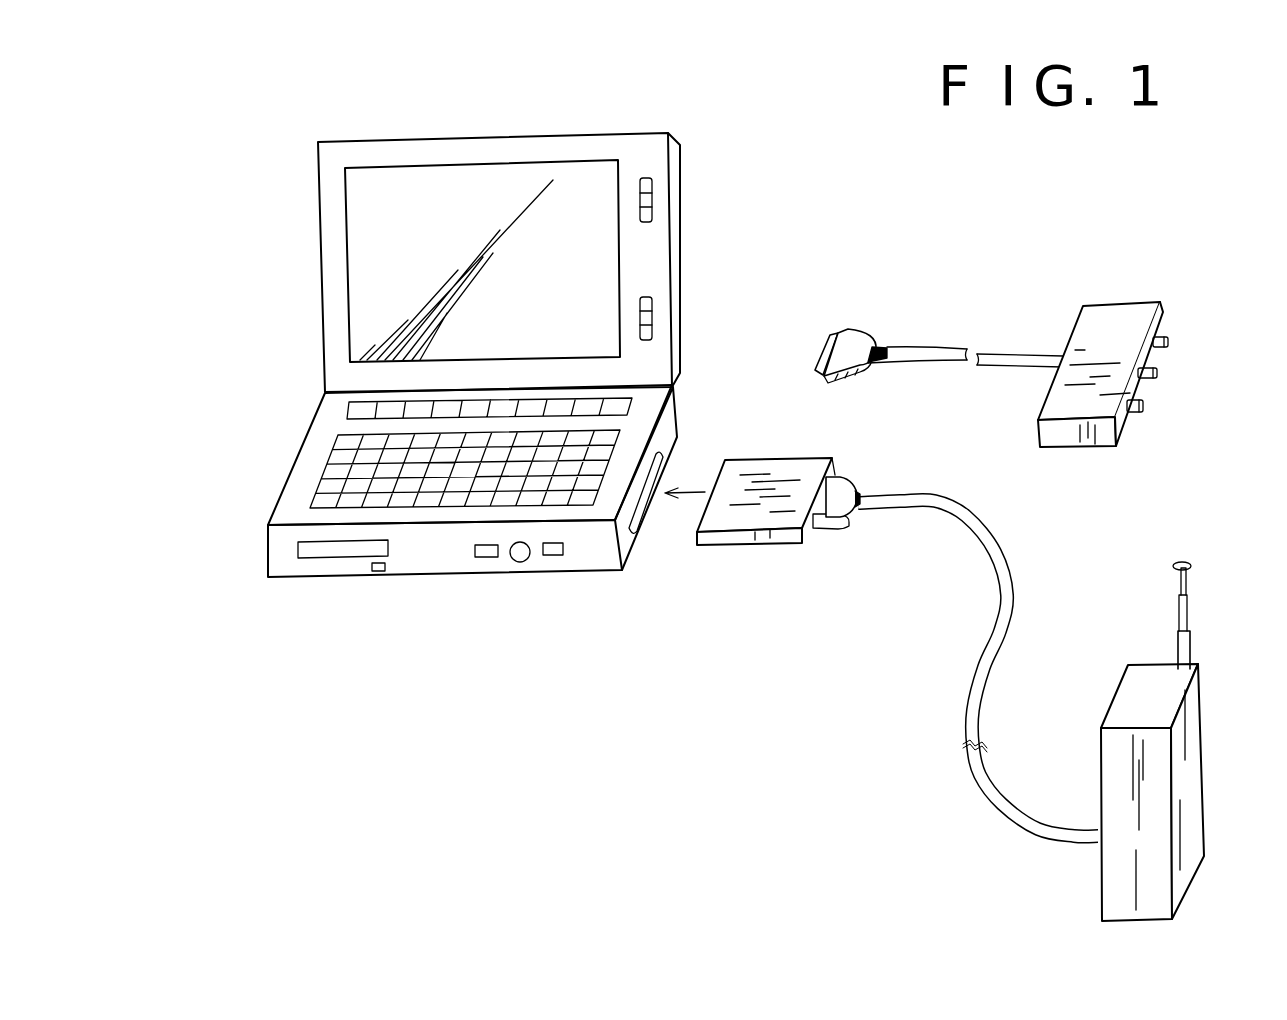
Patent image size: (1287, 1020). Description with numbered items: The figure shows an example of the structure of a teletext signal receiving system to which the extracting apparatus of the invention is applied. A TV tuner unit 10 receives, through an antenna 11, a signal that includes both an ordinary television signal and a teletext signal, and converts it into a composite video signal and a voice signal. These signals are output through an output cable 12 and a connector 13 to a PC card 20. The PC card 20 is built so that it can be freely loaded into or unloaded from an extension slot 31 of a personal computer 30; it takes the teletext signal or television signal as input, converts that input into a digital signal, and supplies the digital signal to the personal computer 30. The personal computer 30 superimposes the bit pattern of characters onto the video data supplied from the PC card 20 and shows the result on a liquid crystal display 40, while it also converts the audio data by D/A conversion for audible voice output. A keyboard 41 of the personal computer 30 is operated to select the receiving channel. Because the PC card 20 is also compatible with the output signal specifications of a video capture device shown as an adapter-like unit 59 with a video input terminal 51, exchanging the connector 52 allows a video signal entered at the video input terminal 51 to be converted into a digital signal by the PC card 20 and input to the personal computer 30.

The TV tuner unit 10 is at (1099, 898).
The antenna 11 is at (1188, 607).
The output cable 12 is at (988, 667).
The connector 13 is at (843, 477).
The PC card 20 is at (775, 547).
The personal computer 30 is at (330, 578).
The extension slot 31 is at (637, 515).
The liquid crystal display 40 is at (593, 258).
The keyboard 41 is at (315, 492).
The video input terminal 51 is at (1168, 343).
The connector 52 is at (857, 330).
The adapter unit 59 is at (1125, 302).